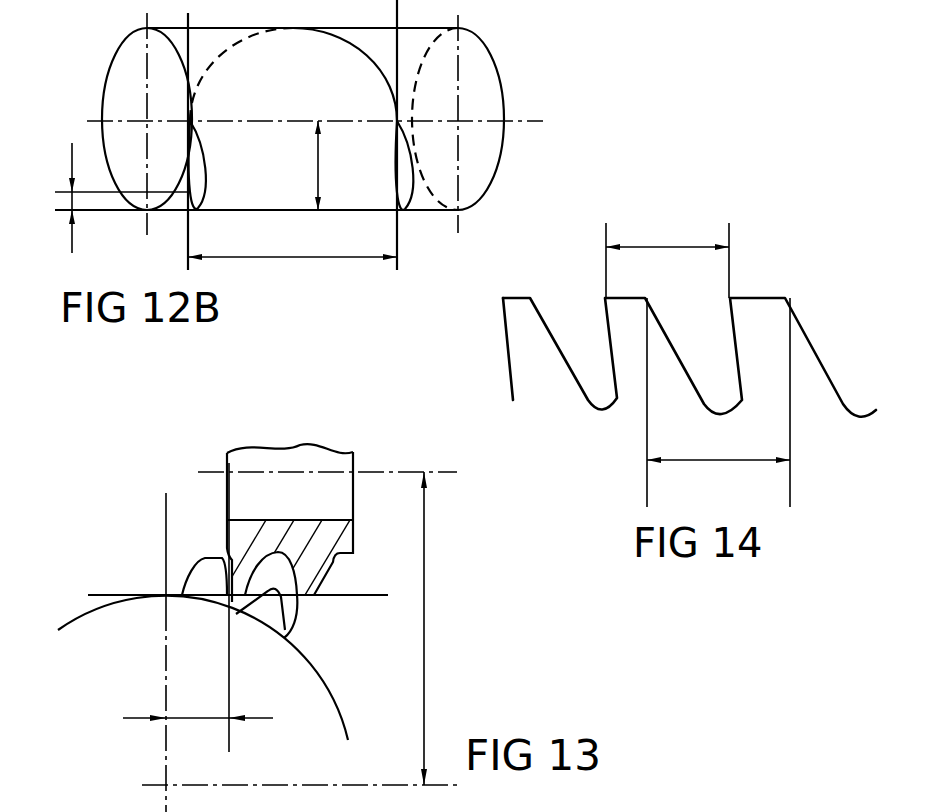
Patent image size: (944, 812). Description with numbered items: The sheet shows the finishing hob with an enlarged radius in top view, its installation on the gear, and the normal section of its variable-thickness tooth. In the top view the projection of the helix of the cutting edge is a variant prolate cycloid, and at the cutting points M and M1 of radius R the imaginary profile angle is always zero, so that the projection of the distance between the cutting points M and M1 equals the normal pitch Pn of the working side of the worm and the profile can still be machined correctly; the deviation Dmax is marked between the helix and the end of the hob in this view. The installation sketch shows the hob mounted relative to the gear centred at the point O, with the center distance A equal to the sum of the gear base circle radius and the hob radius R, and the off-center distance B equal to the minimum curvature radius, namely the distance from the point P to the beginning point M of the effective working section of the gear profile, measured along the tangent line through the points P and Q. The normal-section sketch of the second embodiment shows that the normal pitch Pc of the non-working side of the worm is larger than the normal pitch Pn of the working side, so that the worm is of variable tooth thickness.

In FIG. 12B, the cutting point M is at (186, 166).
In FIG. 13, the cutting point M is at (204, 578).
In FIG. 12B, the cutting point M1 is at (388, 165).
In FIG. 13, the cutting point M1 is at (280, 595).
In FIG. 12B, the maximum deviation Δmax Dmax is at (60, 184).
In FIG. 12B, the radius R is at (306, 165).
In FIG. 12B, the normal pitch of working side Pn is at (292, 245).
In FIG. 14, the normal pitch of working side Pn is at (667, 254).
In FIG. 14, the normal pitch of non-working side Pc is at (718, 402).
In FIG. 13, the point P is at (147, 584).
In FIG. 13, the point Q on pitch line Q is at (391, 582).
In FIG. 13, the center O of worm wheel O is at (184, 768).
In FIG. 13, the off-center distance B is at (198, 705).
In FIG. 13, the center distance A is at (491, 628).